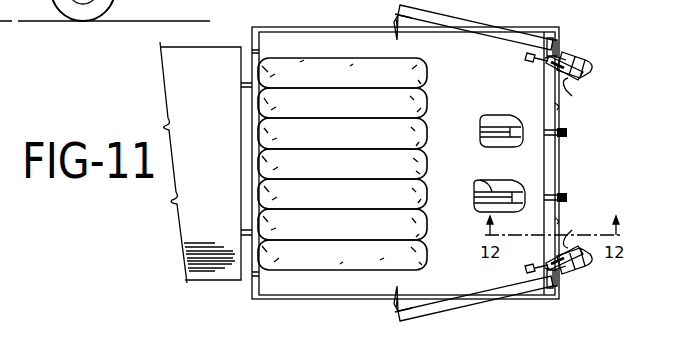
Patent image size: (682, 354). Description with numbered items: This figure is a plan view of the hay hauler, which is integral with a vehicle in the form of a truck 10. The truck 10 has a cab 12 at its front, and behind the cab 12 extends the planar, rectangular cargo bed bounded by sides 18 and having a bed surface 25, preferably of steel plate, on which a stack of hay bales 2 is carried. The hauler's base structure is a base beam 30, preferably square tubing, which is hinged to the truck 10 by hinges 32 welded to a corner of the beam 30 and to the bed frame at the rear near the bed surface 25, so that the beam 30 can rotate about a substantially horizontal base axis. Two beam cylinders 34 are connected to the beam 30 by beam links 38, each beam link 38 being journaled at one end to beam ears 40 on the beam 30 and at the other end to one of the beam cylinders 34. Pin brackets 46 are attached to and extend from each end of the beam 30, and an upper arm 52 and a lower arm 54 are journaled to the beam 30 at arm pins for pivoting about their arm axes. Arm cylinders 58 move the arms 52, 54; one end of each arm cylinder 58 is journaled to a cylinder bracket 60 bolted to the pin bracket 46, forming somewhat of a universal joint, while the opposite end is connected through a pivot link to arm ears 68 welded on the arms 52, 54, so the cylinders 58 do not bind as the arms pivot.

The bale 2 is at (433, 132).
The truck 10 is at (172, 233).
The cab 12 is at (228, 272).
The sides 18 is at (298, 26).
The bed surface 25 is at (464, 90).
The base beam 30 is at (556, 165).
The hinges 32 is at (561, 108).
The beam cylinders 34 is at (498, 164).
The beam links 38 is at (560, 128).
The beam ears 40 is at (570, 133).
The pin brackets 46 is at (570, 94).
The upper arm 52 is at (437, 308).
The lower arm 54 is at (428, 0).
The arm cylinders 58 is at (546, 70).
The cylinder brackets 60 is at (586, 64).
The arm ears 68 is at (524, 60).